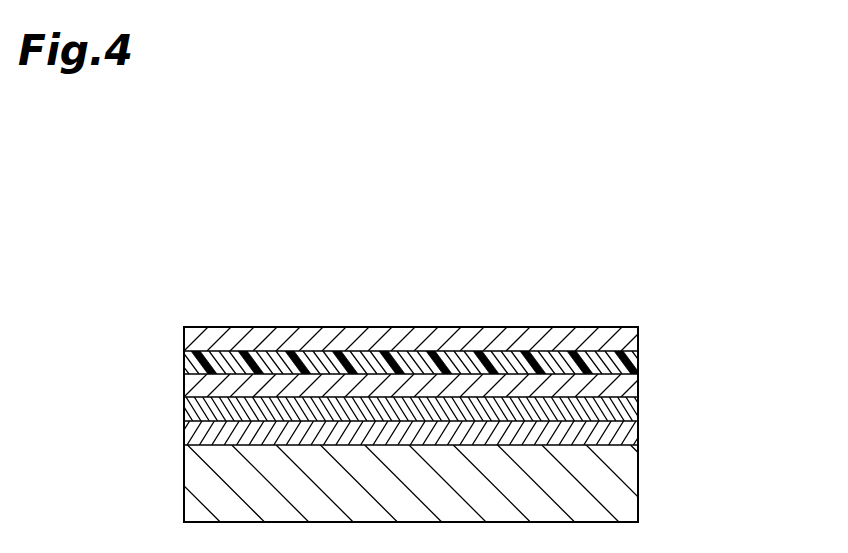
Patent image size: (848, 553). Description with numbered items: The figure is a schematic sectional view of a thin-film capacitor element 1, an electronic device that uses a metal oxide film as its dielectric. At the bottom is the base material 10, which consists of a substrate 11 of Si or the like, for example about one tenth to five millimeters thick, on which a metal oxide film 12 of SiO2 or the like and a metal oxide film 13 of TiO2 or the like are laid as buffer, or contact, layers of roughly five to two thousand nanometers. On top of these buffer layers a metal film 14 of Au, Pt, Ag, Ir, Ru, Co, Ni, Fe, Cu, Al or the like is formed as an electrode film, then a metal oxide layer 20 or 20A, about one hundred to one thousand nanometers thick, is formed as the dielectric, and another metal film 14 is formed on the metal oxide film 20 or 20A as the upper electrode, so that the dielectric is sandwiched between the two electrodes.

The thin-film capacitor element 1 is at (577, 249).
The base material 10 is at (441, 459).
The substrate 11 is at (414, 483).
The metal oxide film 12 is at (638, 432).
The metal oxide film 13 is at (638, 408).
The metal film 14 is at (638, 347).
The metal oxide film 20 is at (638, 370).
The metal oxide layer 20A is at (493, 365).